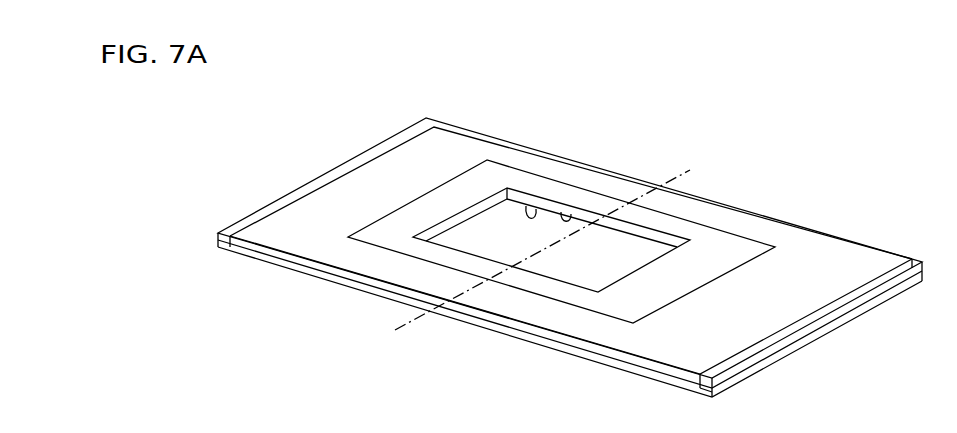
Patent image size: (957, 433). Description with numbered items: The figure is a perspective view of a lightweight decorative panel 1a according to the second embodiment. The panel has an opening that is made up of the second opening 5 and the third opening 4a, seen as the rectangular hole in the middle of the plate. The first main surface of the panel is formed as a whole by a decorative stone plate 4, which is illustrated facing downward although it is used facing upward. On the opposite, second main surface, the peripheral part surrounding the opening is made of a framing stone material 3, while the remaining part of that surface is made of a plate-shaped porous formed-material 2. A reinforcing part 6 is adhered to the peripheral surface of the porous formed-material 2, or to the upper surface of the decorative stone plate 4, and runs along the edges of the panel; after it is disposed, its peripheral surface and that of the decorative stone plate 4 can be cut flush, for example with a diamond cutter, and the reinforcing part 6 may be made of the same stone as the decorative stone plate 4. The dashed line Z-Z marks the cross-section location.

The lightweight decorative panel 1a is at (721, 153).
The porous formed-material 2 is at (828, 262).
The framing stone material 3 is at (732, 245).
The decorative stone plate 4 is at (813, 343).
The third opening 4a is at (535, 207).
The second opening 5 is at (570, 213).
The reinforcing part 6 is at (335, 172).